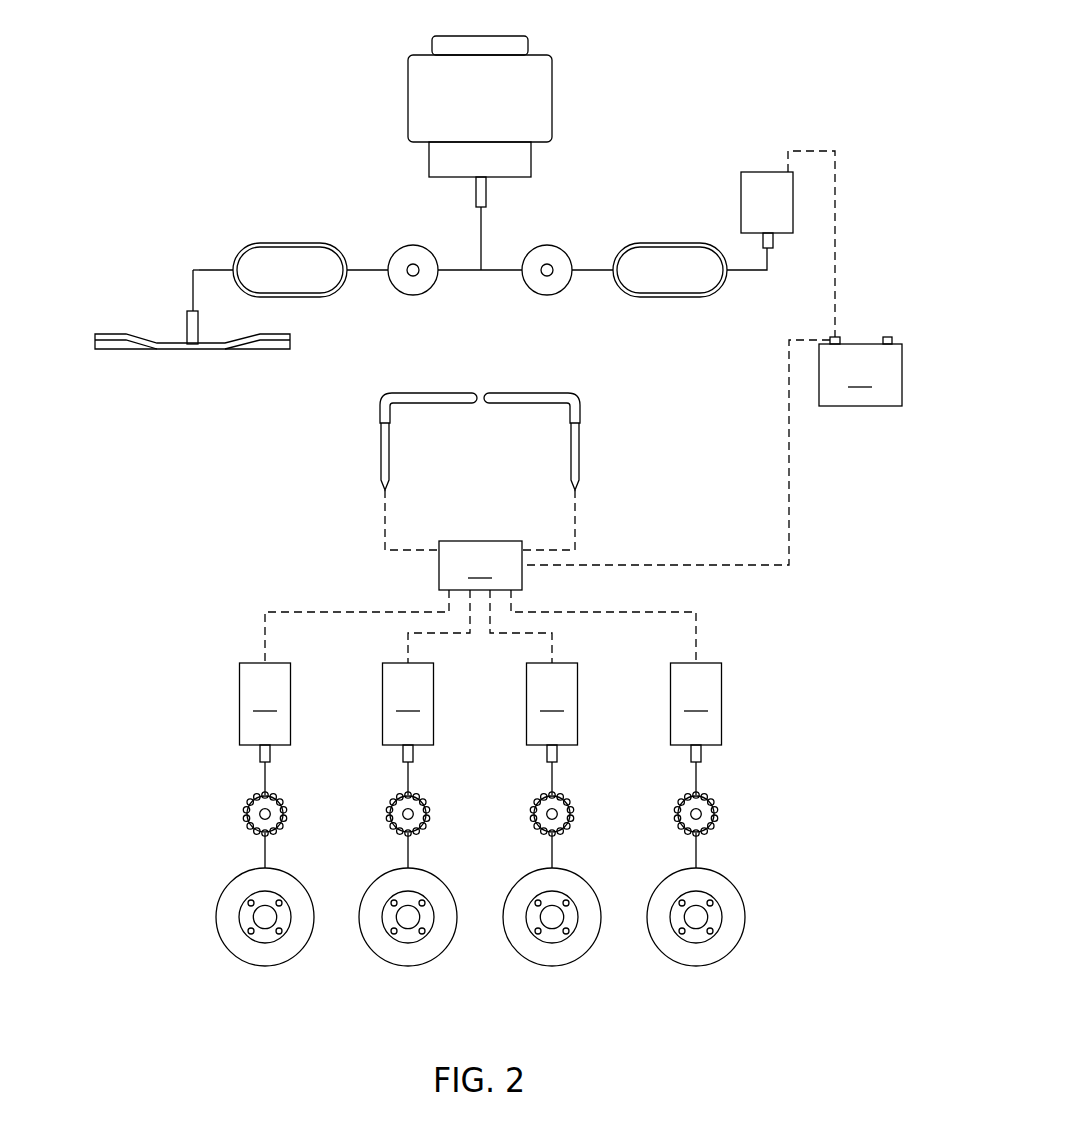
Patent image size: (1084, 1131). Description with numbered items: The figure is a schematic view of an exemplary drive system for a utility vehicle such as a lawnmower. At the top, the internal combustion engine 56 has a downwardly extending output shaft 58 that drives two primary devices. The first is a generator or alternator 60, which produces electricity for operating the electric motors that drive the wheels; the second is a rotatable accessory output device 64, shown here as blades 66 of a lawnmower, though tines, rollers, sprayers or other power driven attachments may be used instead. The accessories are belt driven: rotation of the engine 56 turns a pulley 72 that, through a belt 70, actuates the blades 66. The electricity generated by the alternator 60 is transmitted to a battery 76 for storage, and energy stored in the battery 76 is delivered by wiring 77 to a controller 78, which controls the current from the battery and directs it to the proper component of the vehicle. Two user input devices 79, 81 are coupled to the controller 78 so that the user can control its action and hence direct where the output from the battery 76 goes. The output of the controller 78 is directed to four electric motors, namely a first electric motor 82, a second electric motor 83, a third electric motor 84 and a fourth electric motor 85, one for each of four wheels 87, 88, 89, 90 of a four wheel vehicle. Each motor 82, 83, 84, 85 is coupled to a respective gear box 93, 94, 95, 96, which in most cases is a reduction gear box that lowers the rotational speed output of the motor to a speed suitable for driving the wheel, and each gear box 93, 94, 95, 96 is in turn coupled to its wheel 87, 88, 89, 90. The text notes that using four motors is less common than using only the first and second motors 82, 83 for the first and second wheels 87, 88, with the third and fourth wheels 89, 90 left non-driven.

The internal combustion engine 56 is at (577, 78).
The output shaft 58 is at (487, 195).
The alternator 60 is at (752, 172).
The rotatable accessory output device 64 is at (158, 318).
The blades 66 is at (262, 350).
The belt 70 is at (289, 243).
The pulley 72 is at (413, 295).
The battery 76 is at (860, 371).
The wiring 77 is at (789, 455).
The controller 78 is at (480, 565).
The user input device 79 is at (389, 395).
The user input device 81 is at (571, 395).
The first electric motor 82 is at (265, 729).
The second electric motor 83 is at (408, 729).
The third electric motor 84 is at (552, 729).
The fourth electric motor 85 is at (696, 729).
The first wheel 87 is at (300, 950).
The second wheel 88 is at (443, 950).
The third wheel 89 is at (587, 950).
The fourth wheel 90 is at (731, 950).
The gear box 93 is at (286, 812).
The gear box 94 is at (429, 812).
The gear box 95 is at (573, 812).
The gear box 96 is at (717, 812).